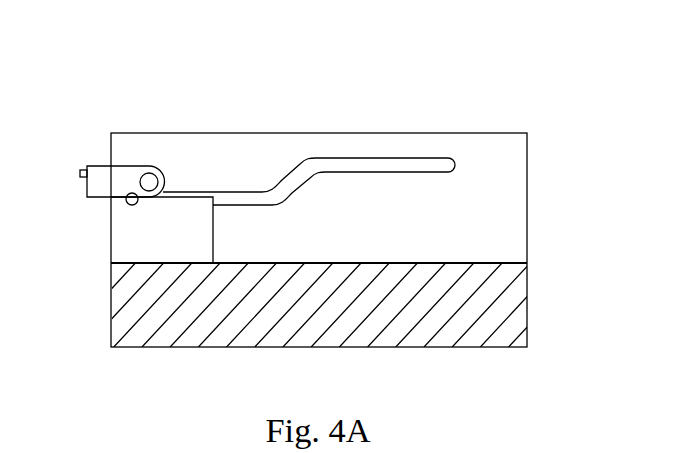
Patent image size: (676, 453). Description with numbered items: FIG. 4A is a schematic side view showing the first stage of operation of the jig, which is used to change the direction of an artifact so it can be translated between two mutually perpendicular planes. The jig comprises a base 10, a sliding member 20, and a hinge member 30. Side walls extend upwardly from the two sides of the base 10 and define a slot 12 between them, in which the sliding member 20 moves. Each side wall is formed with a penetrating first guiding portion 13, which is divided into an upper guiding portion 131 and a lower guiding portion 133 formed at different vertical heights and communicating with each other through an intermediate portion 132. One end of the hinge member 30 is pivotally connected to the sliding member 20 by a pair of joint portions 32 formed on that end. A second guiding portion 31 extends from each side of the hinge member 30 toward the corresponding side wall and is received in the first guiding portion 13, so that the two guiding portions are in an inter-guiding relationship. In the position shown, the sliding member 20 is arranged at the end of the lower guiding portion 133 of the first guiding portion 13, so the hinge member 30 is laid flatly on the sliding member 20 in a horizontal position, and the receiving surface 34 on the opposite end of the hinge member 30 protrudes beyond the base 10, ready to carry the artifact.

The base 10 is at (453, 327).
The slot 12 is at (492, 235).
The first guiding portion 13 is at (336, 137).
The upper guiding portion 131 is at (353, 165).
The intermediate portion 132 is at (290, 182).
The lower guiding portion 133 is at (233, 196).
The sliding member 20 is at (130, 235).
The hinge member 30 is at (97, 165).
The second guiding portion 31 is at (128, 204).
The joint portion 32 is at (161, 166).
The receiving surface 34 is at (82, 180).